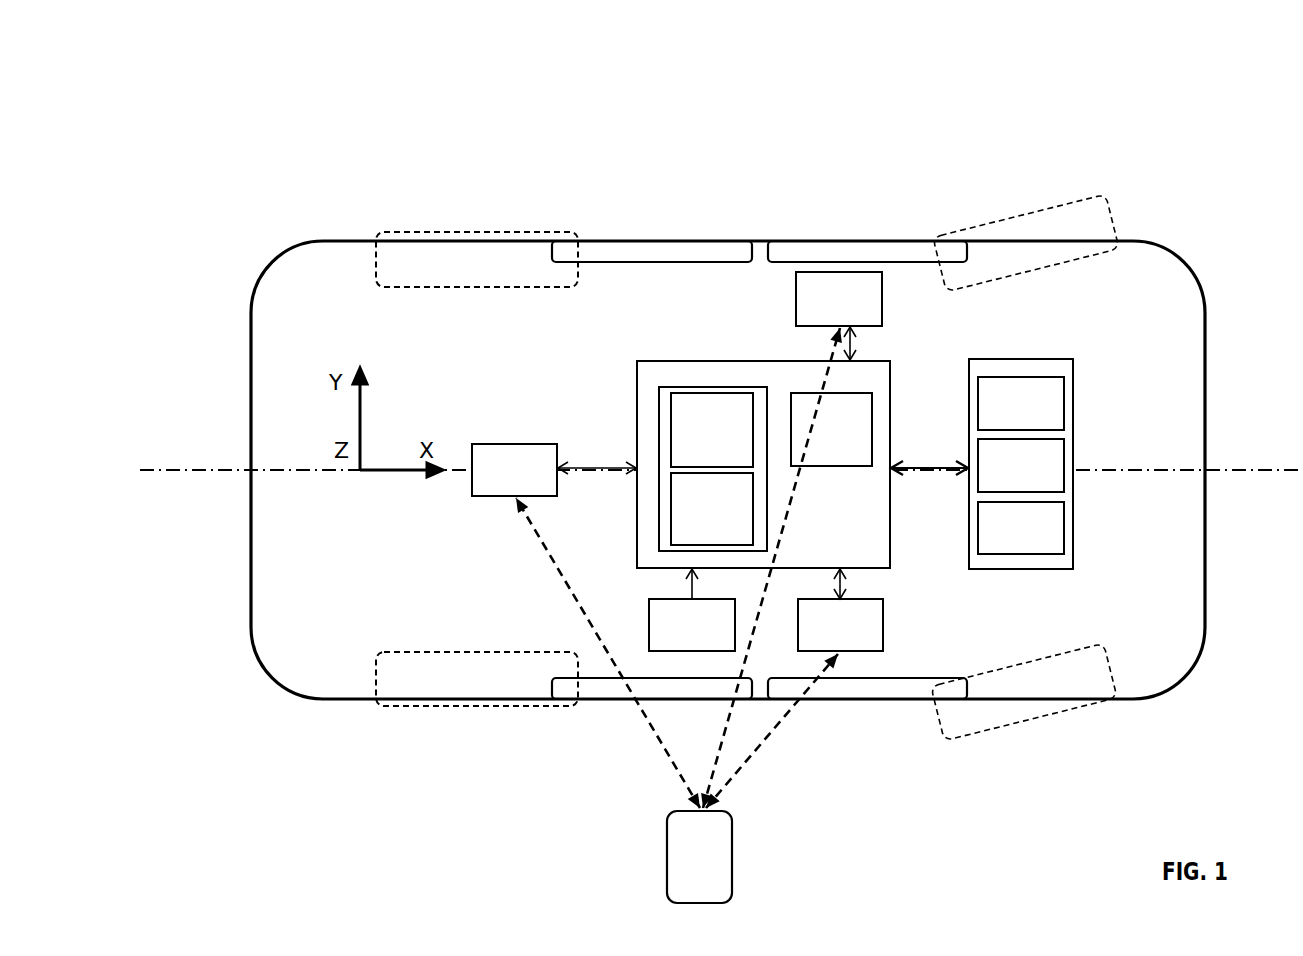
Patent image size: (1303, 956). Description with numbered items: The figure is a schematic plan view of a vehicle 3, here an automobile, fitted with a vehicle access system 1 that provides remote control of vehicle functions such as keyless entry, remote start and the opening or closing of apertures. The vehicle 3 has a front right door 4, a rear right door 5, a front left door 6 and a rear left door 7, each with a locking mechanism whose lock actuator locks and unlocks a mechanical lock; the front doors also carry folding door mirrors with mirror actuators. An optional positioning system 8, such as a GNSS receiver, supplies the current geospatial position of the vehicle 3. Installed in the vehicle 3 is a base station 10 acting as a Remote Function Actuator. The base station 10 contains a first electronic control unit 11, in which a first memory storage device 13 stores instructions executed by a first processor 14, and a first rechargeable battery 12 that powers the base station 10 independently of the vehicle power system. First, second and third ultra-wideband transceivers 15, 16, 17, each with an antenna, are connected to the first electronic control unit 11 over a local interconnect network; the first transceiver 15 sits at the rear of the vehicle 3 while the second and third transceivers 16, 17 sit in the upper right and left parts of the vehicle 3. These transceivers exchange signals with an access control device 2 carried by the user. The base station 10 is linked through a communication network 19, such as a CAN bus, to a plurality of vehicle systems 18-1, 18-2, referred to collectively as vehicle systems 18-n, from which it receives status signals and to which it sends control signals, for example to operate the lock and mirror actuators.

The vehicle access system 1 is at (302, 146).
The access control device 2 is at (678, 837).
The vehicle 3 is at (268, 246).
The front right door 4 is at (900, 685).
The rear right door 5 is at (562, 690).
The front left door 6 is at (880, 252).
The rear left door 7 is at (678, 252).
The positioning system 8 is at (684, 641).
The base station 10 is at (655, 350).
The first electronic control unit 11 is at (657, 423).
The first rechargeable battery 12 is at (816, 446).
The first memory storage device 13 is at (697, 446).
The first processor 14 is at (697, 525).
The first ultra-wideband transceiver 15 is at (499, 486).
The second ultra-wideband transceiver 16 is at (824, 315).
The third ultra-wideband transceiver 17 is at (825, 641).
The vehicle system 18-1 is at (994, 419).
The vehicle system 18-2 is at (994, 481).
The vehicle systems 18-n is at (994, 543).
The communication network 19 is at (929, 454).